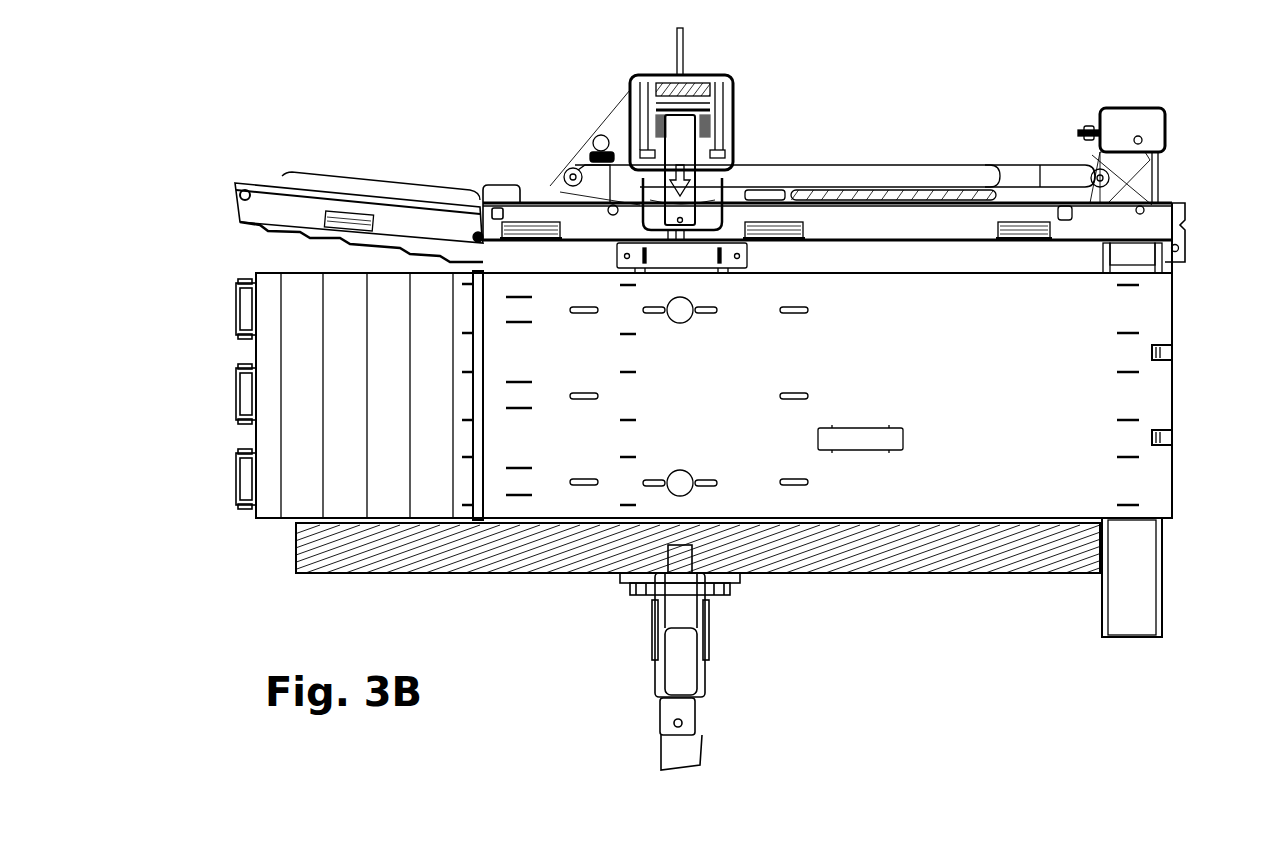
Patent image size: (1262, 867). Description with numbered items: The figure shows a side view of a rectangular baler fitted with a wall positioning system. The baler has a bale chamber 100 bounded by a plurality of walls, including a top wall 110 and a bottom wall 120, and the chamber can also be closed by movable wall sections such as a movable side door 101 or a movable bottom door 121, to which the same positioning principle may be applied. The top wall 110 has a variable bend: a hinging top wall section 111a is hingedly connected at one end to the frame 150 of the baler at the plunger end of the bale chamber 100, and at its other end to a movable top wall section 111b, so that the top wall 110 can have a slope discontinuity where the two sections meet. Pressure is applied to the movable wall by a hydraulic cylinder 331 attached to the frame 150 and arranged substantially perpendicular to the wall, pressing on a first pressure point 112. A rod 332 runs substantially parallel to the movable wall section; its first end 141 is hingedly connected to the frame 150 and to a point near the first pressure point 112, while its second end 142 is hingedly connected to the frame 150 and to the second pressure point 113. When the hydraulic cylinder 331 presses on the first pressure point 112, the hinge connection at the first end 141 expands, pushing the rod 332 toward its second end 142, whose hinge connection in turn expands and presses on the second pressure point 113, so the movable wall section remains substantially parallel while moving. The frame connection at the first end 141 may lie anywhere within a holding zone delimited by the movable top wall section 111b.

The bale chamber 100 is at (876, 367).
The movable side door 101 is at (1075, 380).
The top wall 110 is at (1074, 246).
The hinging top wall section 111a is at (305, 205).
The movable top wall section 111b is at (583, 222).
The first pressure point 112 is at (690, 230).
The second pressure point 113 is at (1162, 205).
The bottom wall 120 is at (1078, 518).
The movable bottom door 121 is at (928, 540).
The first end 141 is at (570, 172).
The second end 142 is at (1100, 178).
The frame 150 is at (700, 78).
The hydraulic cylinder 331 is at (718, 152).
The rod 332 is at (890, 180).